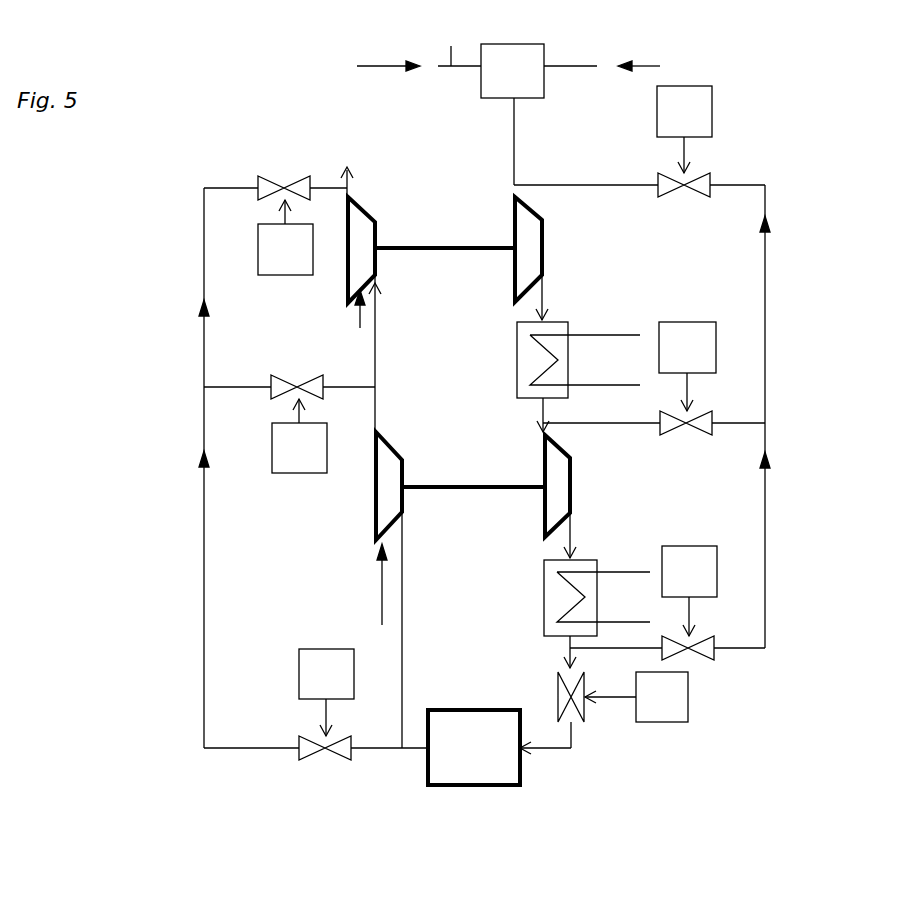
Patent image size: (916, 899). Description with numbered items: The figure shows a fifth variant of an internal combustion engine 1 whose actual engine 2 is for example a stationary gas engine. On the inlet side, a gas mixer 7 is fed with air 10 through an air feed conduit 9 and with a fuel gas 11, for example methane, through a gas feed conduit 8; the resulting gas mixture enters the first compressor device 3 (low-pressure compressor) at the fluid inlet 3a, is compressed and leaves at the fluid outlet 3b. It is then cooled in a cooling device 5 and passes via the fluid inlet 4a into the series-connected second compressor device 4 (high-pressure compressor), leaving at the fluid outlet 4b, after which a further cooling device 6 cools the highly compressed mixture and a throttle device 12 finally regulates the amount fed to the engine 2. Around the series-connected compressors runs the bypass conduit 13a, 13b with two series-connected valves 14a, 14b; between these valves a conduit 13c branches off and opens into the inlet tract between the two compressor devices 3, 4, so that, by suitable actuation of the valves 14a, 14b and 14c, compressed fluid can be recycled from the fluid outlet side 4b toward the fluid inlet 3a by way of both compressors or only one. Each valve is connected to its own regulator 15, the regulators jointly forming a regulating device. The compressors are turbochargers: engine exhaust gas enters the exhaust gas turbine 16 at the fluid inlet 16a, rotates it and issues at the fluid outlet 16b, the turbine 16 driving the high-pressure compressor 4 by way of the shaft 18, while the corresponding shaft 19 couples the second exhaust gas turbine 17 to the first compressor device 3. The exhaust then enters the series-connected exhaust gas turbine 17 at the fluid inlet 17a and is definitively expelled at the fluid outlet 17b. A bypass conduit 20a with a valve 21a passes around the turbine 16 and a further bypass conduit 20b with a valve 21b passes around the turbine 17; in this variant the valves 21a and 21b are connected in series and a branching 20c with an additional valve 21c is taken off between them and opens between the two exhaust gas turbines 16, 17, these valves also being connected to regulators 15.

The internal combustion engine 1 is at (877, 164).
The engine 2 is at (474, 747).
The first compressor device 3 is at (525, 258).
The fluid inlet 3a is at (548, 213).
The fluid outlet 3b is at (545, 289).
The second compressor device 4 is at (555, 497).
The fluid inlet 4a is at (566, 443).
The fluid outlet 4b is at (570, 529).
The cooling device 5 is at (517, 360).
The further cooling device 6 is at (563, 597).
The gas mixer 7 is at (517, 71).
The gas feed conduit 8 is at (446, 42).
The air feed conduit 9 is at (565, 66).
The air 10 is at (654, 67).
The fuel gas 11 is at (370, 67).
The throttle device 12 is at (575, 700).
The bypass conduit 13a is at (766, 285).
The bypass conduit 13b is at (766, 540).
The conduit 13c is at (620, 424).
The valve 14a is at (684, 196).
The valve 14b is at (690, 650).
The valve 14c is at (686, 436).
The regulator 15 is at (487, 411).
The exhaust gas turbine 16 is at (513, 150).
The fluid inlet 16a is at (370, 594).
The fluid outlet 16b is at (396, 432).
The second exhaust gas turbine 17 is at (357, 245).
The fluid inlet 17a is at (351, 317).
The fluid outlet 17b is at (358, 210).
The shaft 18 is at (450, 482).
The shaft 19 is at (432, 246).
The bypass conduit 20a is at (204, 575).
The further bypass conduit 20b is at (203, 278).
The branching 20c is at (235, 392).
The valve 21a is at (325, 763).
The valve 21b is at (283, 176).
The additional valve 21c is at (297, 375).